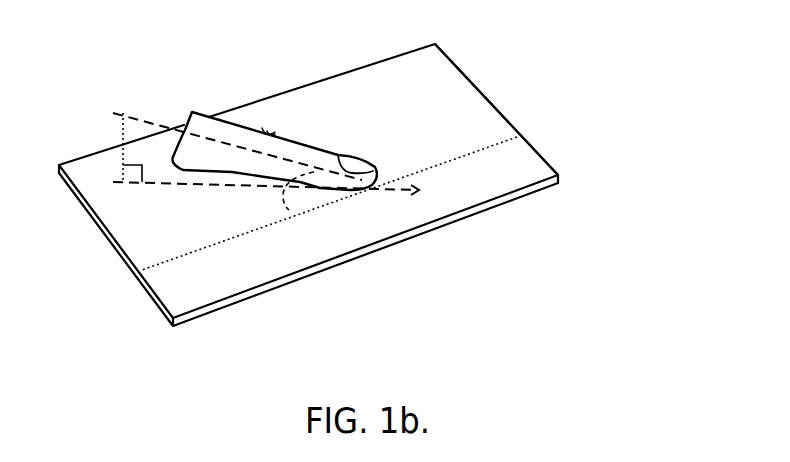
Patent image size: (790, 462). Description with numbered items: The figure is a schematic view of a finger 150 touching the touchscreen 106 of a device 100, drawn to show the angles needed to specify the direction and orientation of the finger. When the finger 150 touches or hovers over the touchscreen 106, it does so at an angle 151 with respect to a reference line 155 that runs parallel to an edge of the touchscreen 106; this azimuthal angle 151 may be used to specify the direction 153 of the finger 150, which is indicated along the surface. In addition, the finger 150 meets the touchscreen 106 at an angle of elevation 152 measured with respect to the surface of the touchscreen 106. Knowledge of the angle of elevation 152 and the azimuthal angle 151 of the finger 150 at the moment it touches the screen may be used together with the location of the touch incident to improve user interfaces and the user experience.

The device 100 is at (97, 219).
The touchscreen 106 is at (472, 102).
The finger 150 is at (293, 136).
The angle 151 is at (284, 211).
The angle of elevation 152 is at (315, 175).
The direction 153 is at (428, 190).
The reference line 155 is at (432, 168).